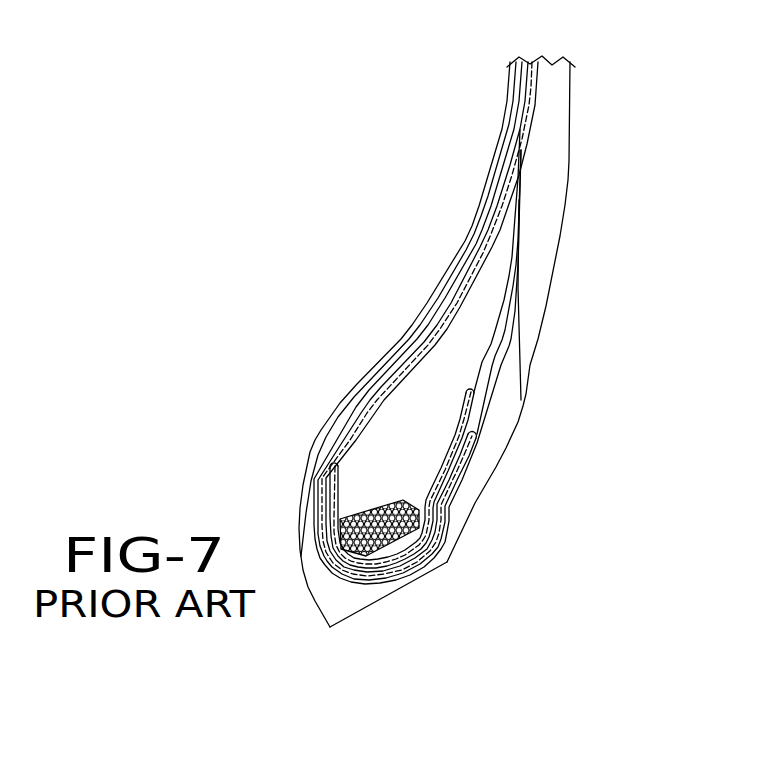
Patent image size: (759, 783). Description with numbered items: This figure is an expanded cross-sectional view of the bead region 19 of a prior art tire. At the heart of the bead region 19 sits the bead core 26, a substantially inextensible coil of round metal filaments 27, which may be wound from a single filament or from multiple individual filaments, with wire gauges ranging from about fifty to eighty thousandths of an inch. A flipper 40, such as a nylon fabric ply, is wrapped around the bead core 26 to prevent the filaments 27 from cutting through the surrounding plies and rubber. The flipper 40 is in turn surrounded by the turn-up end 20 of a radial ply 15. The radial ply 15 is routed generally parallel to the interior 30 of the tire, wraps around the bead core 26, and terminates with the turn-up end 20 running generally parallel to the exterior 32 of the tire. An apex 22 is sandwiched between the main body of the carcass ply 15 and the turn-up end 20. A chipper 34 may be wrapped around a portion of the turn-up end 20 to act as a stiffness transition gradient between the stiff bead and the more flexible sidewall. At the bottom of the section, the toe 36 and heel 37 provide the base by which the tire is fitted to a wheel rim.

The bead region 19 is at (417, 177).
The interior of the tire 30 is at (417, 256).
The exterior of the tire 32 is at (562, 290).
The radial ply 15 is at (428, 336).
The apex 22 is at (433, 388).
The chipper 34 is at (474, 452).
The turn-up end 20 is at (475, 393).
The flipper 40 is at (349, 498).
The bead core 26 is at (398, 500).
The round metal filaments 27 is at (418, 523).
The toe 36 is at (367, 608).
The heel 37 is at (444, 563).